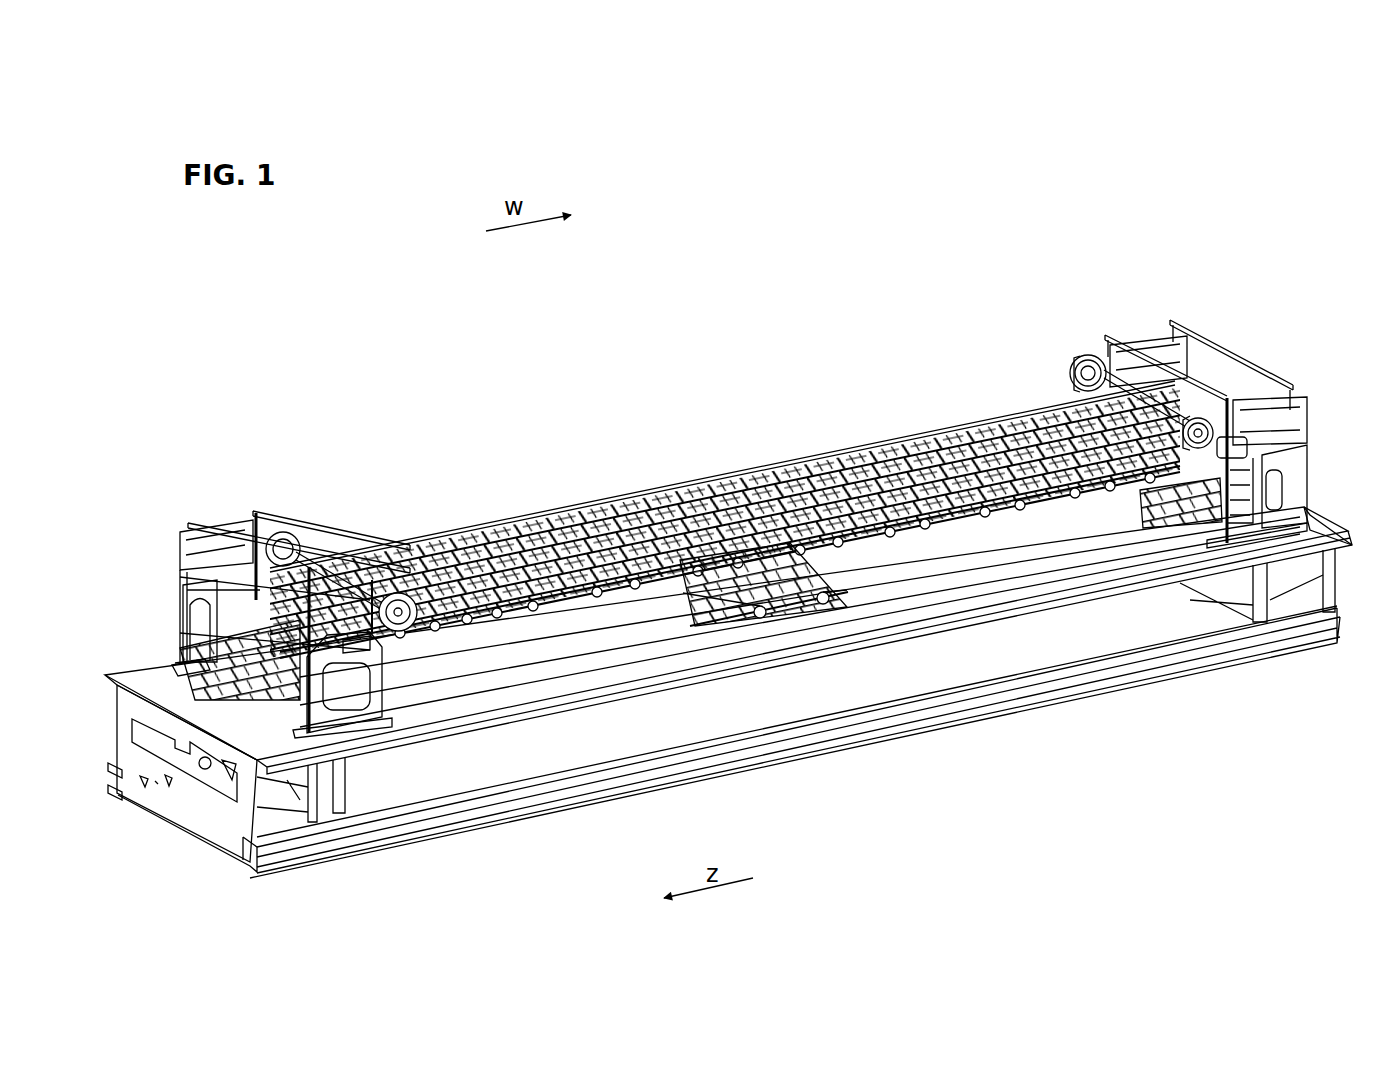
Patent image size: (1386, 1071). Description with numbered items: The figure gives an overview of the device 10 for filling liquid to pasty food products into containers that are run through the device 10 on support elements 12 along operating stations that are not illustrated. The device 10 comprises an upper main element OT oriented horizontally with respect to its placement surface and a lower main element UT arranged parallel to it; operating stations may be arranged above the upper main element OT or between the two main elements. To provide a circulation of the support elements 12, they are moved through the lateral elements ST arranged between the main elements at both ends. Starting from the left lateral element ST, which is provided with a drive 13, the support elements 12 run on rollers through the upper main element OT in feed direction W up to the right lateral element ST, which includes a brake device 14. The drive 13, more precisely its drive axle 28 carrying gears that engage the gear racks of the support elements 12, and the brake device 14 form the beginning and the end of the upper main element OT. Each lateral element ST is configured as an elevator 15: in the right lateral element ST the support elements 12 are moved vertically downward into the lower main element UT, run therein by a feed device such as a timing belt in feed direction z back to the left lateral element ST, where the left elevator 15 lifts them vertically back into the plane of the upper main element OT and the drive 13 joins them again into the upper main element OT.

The device 10 is at (898, 216).
The support elements 12 is at (541, 499).
The drive 13 is at (249, 502).
The brake device 14 is at (1062, 347).
The elevator 15 is at (1216, 322).
The drive axle 28 is at (311, 562).
The lateral element ST is at (176, 496).
The upper main element OT is at (793, 429).
The lower main element UT is at (851, 601).